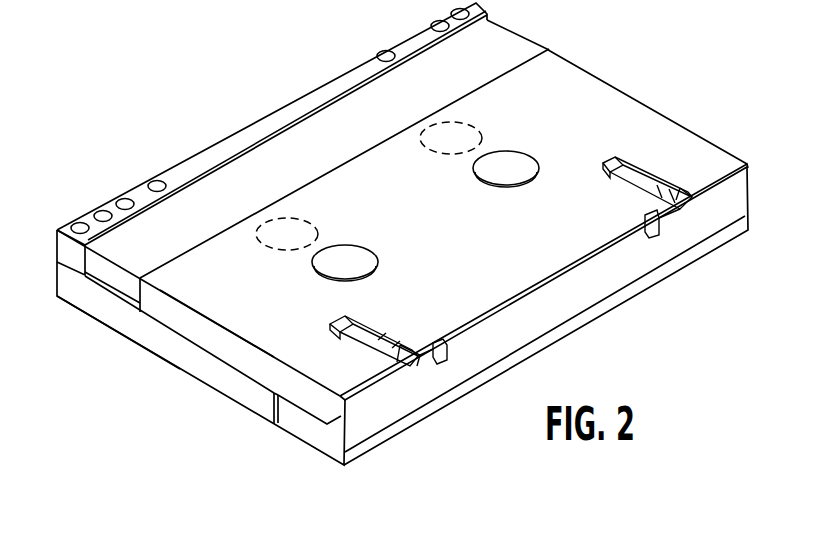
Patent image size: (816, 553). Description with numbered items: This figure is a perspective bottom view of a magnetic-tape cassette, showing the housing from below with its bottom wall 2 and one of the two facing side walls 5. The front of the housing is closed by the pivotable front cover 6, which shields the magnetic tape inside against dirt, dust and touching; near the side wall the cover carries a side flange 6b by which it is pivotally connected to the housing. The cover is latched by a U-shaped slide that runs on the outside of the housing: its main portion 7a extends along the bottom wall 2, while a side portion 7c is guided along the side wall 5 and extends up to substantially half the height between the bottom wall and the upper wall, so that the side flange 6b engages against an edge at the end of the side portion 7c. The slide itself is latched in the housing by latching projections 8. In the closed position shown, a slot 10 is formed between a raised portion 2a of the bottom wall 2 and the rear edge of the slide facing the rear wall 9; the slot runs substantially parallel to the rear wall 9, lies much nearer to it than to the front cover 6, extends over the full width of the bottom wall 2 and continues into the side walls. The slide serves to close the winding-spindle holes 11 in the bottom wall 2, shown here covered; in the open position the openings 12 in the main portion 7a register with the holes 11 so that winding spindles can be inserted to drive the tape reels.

The bottom wall 2 is at (130, 240).
The raised portion of the bottom wall 2a is at (276, 112).
The side wall 5 is at (146, 341).
The front cover 6 is at (555, 318).
The side flange 6b is at (297, 423).
The main portion of the slide 7a is at (228, 250).
The side portion of the slide 7c is at (223, 352).
The latching projections 8 is at (350, 322).
The rear wall 9 is at (178, 163).
The slot 10 is at (345, 117).
The winding-spindle holes 11 is at (276, 250).
The openings 12 is at (366, 262).